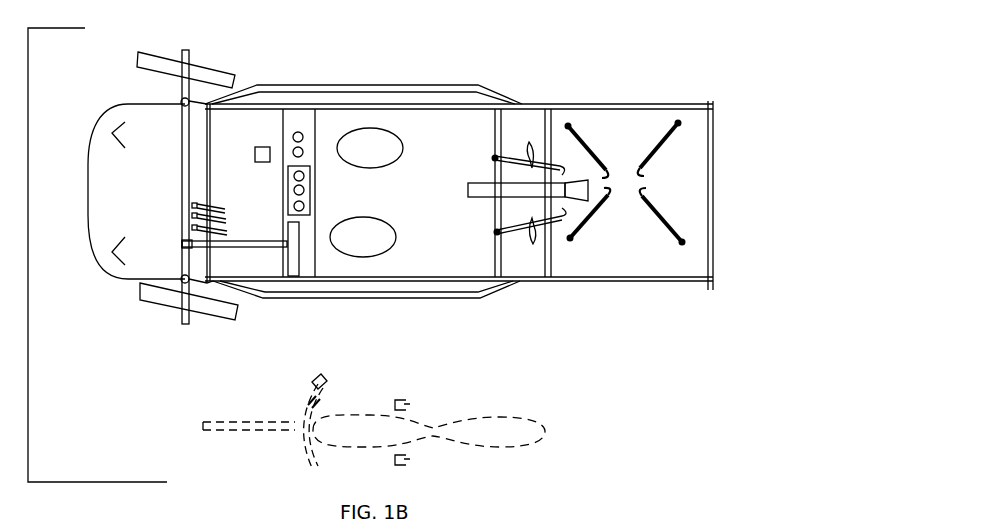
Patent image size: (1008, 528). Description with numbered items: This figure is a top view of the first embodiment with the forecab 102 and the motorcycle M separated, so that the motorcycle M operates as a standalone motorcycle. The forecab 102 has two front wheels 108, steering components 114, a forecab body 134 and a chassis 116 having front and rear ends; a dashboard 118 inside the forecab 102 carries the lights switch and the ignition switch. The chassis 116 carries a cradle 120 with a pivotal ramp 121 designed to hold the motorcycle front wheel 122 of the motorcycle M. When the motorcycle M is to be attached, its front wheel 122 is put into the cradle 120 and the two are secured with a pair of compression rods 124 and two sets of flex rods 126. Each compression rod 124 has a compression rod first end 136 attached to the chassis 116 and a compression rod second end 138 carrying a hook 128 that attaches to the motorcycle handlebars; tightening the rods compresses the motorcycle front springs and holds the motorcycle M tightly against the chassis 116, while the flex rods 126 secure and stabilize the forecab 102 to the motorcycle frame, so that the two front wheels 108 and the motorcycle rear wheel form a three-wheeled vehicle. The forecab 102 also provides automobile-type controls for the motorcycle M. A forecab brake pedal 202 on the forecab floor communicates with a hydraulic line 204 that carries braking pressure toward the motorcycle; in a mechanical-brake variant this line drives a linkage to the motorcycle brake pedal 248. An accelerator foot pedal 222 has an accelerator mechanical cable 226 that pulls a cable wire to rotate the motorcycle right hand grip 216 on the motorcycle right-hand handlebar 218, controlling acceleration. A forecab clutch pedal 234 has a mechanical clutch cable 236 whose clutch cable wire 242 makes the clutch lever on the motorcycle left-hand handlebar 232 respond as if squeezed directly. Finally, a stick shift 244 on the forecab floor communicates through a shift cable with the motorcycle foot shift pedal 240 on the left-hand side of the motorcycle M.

The forecab 102 is at (108, 102).
The front wheels 108 is at (210, 70).
The steering components 114 is at (203, 142).
The chassis 116 is at (707, 282).
The dashboard 118 is at (310, 249).
The cradle 120 is at (476, 198).
The pivotal ramp 121 is at (575, 180).
The motorcycle front wheel 122 is at (250, 433).
The compression rods 124 is at (517, 236).
The flex rods 126 is at (643, 145).
The hook 128 is at (290, 410).
The forecab body 134 is at (425, 83).
The compression rod first end 136 is at (498, 231).
The compression rod second end 138 is at (553, 222).
The forecab brake pedal 202 is at (183, 220).
The hydraulic line 204 is at (280, 238).
The motorcycle right hand grip 216 is at (312, 380).
The motorcycle right-hand handlebar 218 is at (322, 397).
The accelerator foot pedal 222 is at (192, 204).
The accelerator mechanical cable 226 is at (217, 208).
The motorcycle left-hand handlebar 232 is at (318, 462).
The forecab clutch pedal 234 is at (192, 214).
The mechanical clutch cable 236 is at (275, 210).
The motorcycle foot shift pedal 240 is at (410, 405).
The clutch cable wire 242 is at (270, 156).
The stick shift 244 is at (255, 153).
The motorcycle brake pedal 248 is at (410, 462).
The motorcycle M is at (513, 400).